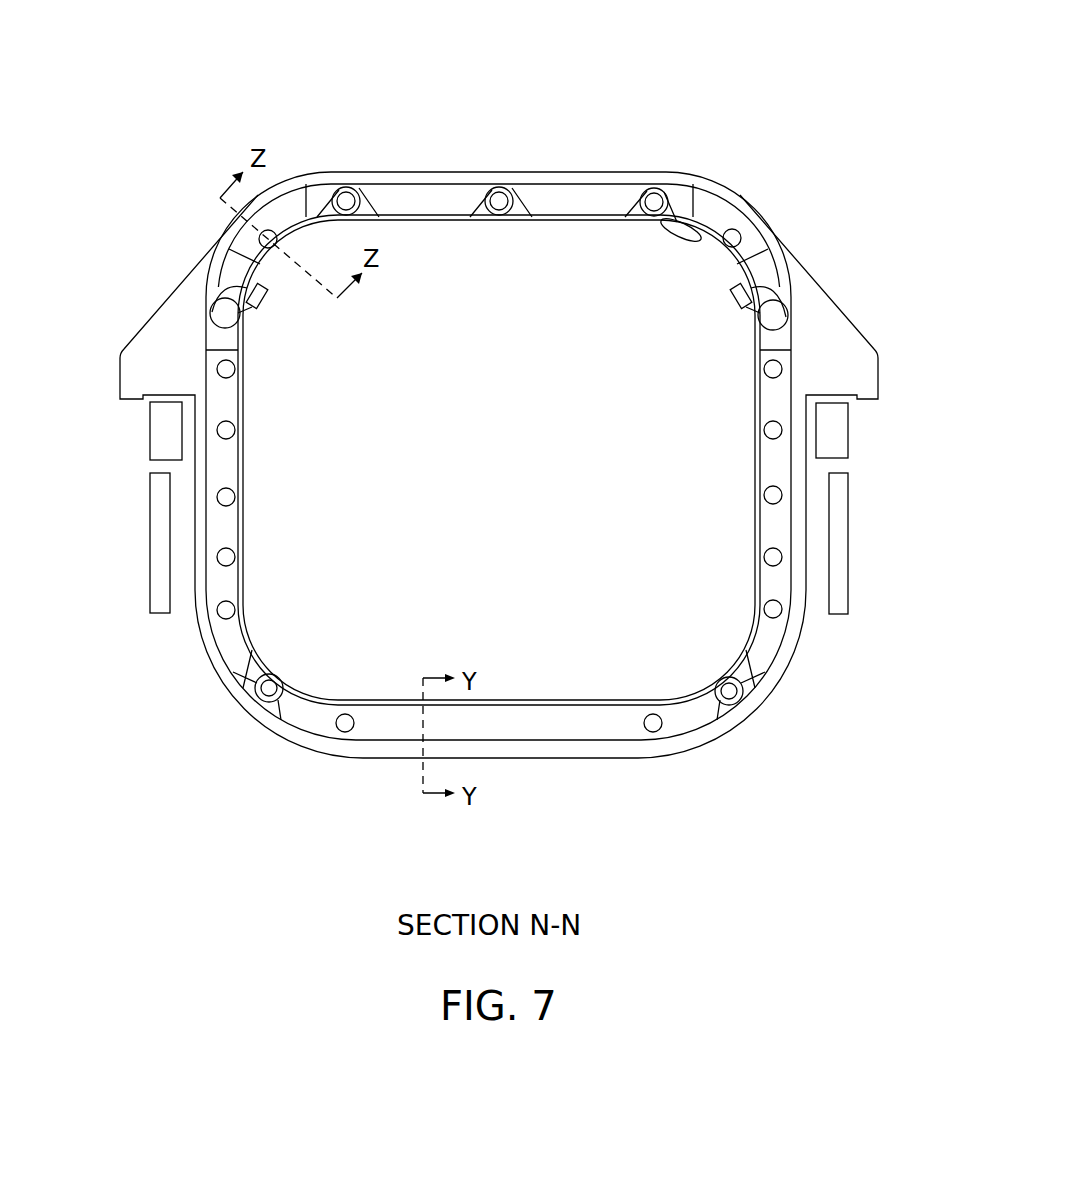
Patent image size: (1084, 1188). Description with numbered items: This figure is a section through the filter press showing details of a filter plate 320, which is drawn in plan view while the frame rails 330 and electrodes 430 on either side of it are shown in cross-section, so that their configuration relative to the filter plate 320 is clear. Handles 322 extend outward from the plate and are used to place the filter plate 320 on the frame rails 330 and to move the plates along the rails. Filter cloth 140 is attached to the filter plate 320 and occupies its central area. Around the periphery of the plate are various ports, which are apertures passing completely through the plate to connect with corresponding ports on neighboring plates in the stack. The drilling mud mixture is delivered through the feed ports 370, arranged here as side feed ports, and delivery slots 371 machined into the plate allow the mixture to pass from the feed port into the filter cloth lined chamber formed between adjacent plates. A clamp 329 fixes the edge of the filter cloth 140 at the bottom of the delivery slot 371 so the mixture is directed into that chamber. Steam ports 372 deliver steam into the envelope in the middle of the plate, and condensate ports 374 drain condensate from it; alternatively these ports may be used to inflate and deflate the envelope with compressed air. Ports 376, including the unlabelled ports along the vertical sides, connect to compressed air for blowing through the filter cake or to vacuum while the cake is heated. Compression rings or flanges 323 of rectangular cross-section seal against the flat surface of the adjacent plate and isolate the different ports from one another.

The filter plate 320 is at (243, 74).
The handles 322 is at (850, 343).
The compression rings/flanges 323 is at (617, 171).
The clamp 329 is at (778, 278).
The frame rails 330 is at (840, 430).
The feed ports 370 is at (222, 315).
The delivery slots 371 is at (237, 287).
The steam ports 372 is at (485, 201).
The condensate ports 374 is at (262, 690).
The ports 376 is at (268, 239).
The filter cloth 140 is at (338, 670).
The electrodes 430 is at (155, 590).